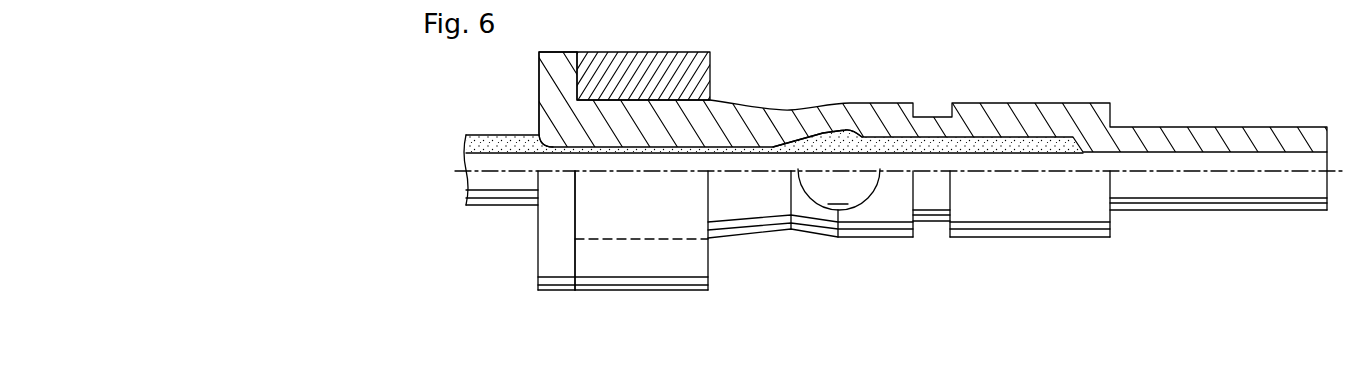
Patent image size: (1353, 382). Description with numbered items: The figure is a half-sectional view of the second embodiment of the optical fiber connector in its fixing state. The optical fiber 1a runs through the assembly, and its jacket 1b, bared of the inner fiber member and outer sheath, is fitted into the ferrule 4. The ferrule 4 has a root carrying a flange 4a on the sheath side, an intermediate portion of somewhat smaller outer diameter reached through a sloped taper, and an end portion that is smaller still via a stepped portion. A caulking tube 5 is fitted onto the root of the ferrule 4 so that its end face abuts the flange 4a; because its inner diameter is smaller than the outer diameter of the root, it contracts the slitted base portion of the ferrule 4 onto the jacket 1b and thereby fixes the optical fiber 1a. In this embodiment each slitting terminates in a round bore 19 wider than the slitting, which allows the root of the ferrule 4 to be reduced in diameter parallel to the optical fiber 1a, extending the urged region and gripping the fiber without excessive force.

The optical fiber 1a is at (492, 165).
The jacket 1b is at (492, 147).
The ferrule 4 is at (1033, 99).
The flange 4a is at (548, 62).
The caulking tube 5 is at (697, 70).
The round bore 19 is at (832, 204).